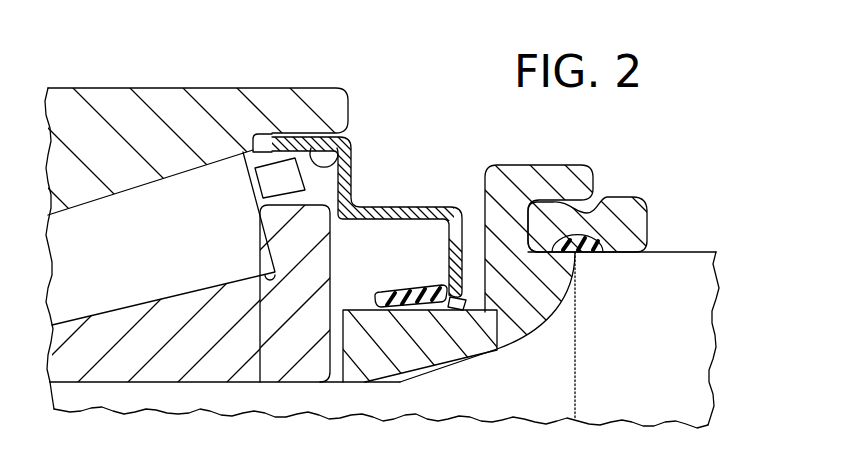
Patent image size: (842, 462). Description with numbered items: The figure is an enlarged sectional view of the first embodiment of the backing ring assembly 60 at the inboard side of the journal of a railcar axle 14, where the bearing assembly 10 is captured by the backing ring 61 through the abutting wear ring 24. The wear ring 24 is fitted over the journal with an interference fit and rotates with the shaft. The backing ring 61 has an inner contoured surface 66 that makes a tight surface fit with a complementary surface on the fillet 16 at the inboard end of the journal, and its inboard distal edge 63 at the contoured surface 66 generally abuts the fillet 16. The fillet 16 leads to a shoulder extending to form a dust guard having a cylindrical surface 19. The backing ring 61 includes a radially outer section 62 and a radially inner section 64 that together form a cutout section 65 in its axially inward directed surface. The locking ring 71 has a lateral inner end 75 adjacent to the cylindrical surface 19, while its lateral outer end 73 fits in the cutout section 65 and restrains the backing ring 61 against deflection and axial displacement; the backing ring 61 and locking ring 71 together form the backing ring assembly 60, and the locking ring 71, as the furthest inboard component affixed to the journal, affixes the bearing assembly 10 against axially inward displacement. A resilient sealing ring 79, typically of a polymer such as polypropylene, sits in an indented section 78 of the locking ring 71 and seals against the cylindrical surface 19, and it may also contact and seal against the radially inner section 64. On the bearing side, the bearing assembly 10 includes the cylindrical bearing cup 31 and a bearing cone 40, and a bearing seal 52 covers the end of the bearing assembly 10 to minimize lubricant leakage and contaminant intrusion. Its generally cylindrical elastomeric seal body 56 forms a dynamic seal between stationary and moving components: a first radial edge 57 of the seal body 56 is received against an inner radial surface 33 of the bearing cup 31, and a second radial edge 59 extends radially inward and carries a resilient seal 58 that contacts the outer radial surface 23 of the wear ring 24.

The bearing assembly 10 is at (247, 67).
The railcar axle 14 is at (677, 323).
The fillet 16 is at (575, 322).
The cylindrical surface 19 is at (667, 252).
The outer radial surface 23 is at (360, 308).
The wear ring 24 is at (363, 382).
The bearing cup 31 is at (348, 104).
The inner radial surface 33 is at (350, 152).
The bearing cone 40 is at (263, 383).
The bearing seal 52 is at (372, 204).
The seal body 56 is at (423, 206).
The first radial edge 57 is at (291, 137).
The resilient seal 58 is at (403, 288).
The second radial edge 59 is at (449, 247).
The backing ring assembly 60 is at (648, 157).
The backing ring 61 is at (484, 190).
The radially outer section 62 is at (553, 199).
The inboard distal edge 63 is at (578, 256).
The radially inner section 64 is at (551, 248).
The cutout section 65 is at (528, 240).
The inner contoured surface 66 is at (540, 323).
The locking ring 71 is at (648, 210).
The lateral outer end 73 is at (552, 206).
The lateral inner end 75 is at (643, 252).
The indented section 78 is at (578, 253).
The resilient sealing ring 79 is at (596, 253).